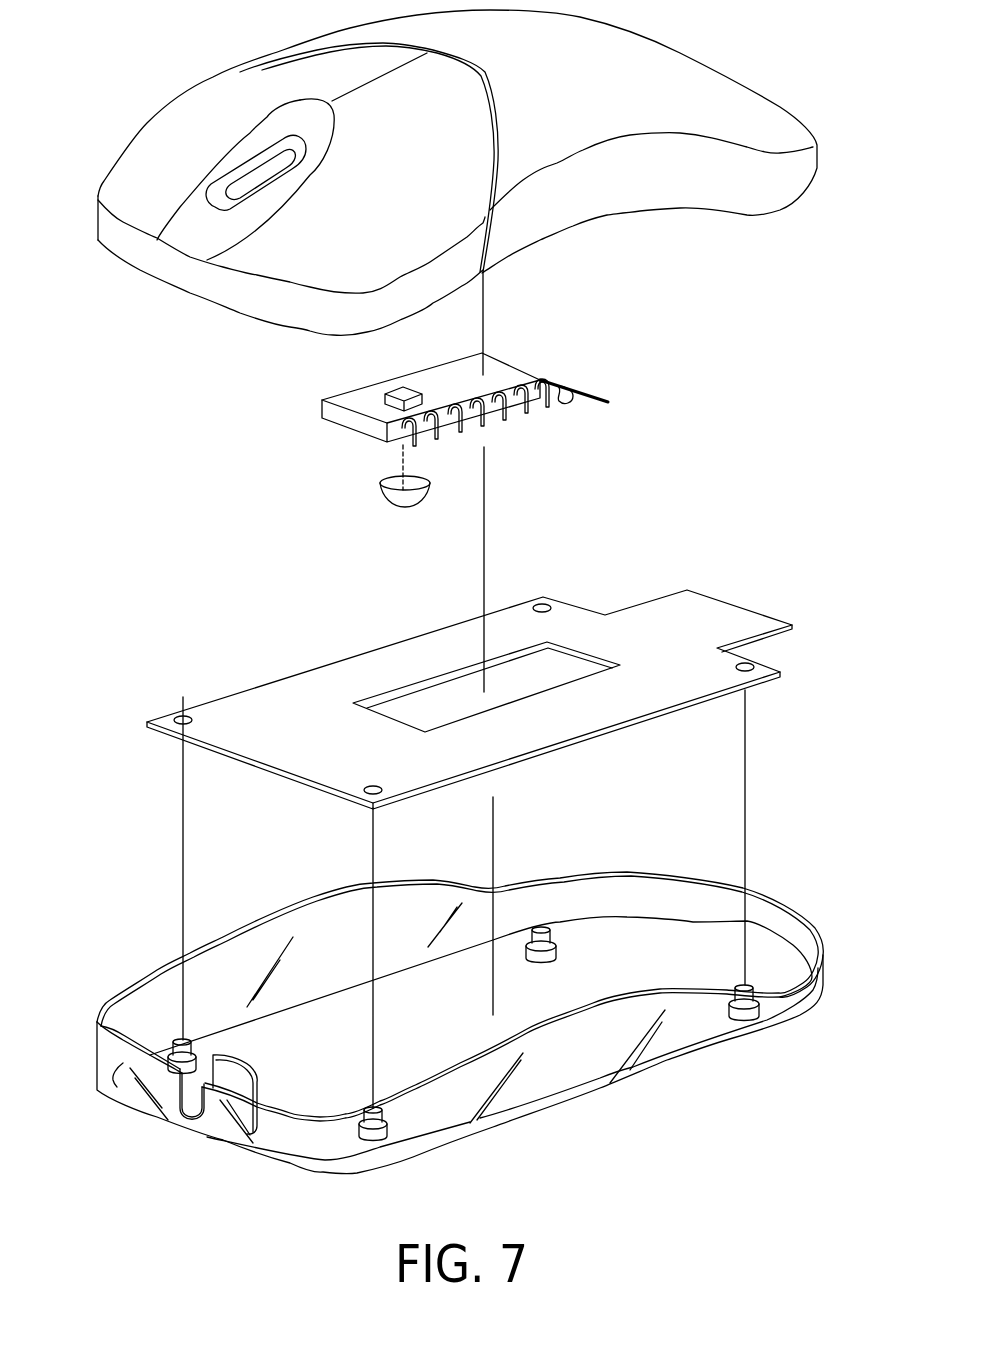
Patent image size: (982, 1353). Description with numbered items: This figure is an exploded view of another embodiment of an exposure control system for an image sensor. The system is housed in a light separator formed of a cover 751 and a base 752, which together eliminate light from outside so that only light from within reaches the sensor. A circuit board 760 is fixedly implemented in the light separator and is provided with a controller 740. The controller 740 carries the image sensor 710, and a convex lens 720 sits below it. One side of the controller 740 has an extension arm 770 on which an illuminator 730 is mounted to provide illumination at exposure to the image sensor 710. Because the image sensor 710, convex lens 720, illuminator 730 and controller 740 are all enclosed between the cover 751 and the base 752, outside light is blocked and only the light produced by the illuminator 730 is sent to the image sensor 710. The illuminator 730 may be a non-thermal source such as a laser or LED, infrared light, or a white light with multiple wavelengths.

The image sensor 710 is at (402, 387).
The convex lens 720 is at (382, 502).
The illuminator 730 is at (565, 403).
The controller 740 is at (440, 373).
The cover 751 is at (178, 123).
The base 752 is at (727, 948).
The circuit board 760 is at (717, 607).
The extension arm 770 is at (593, 392).